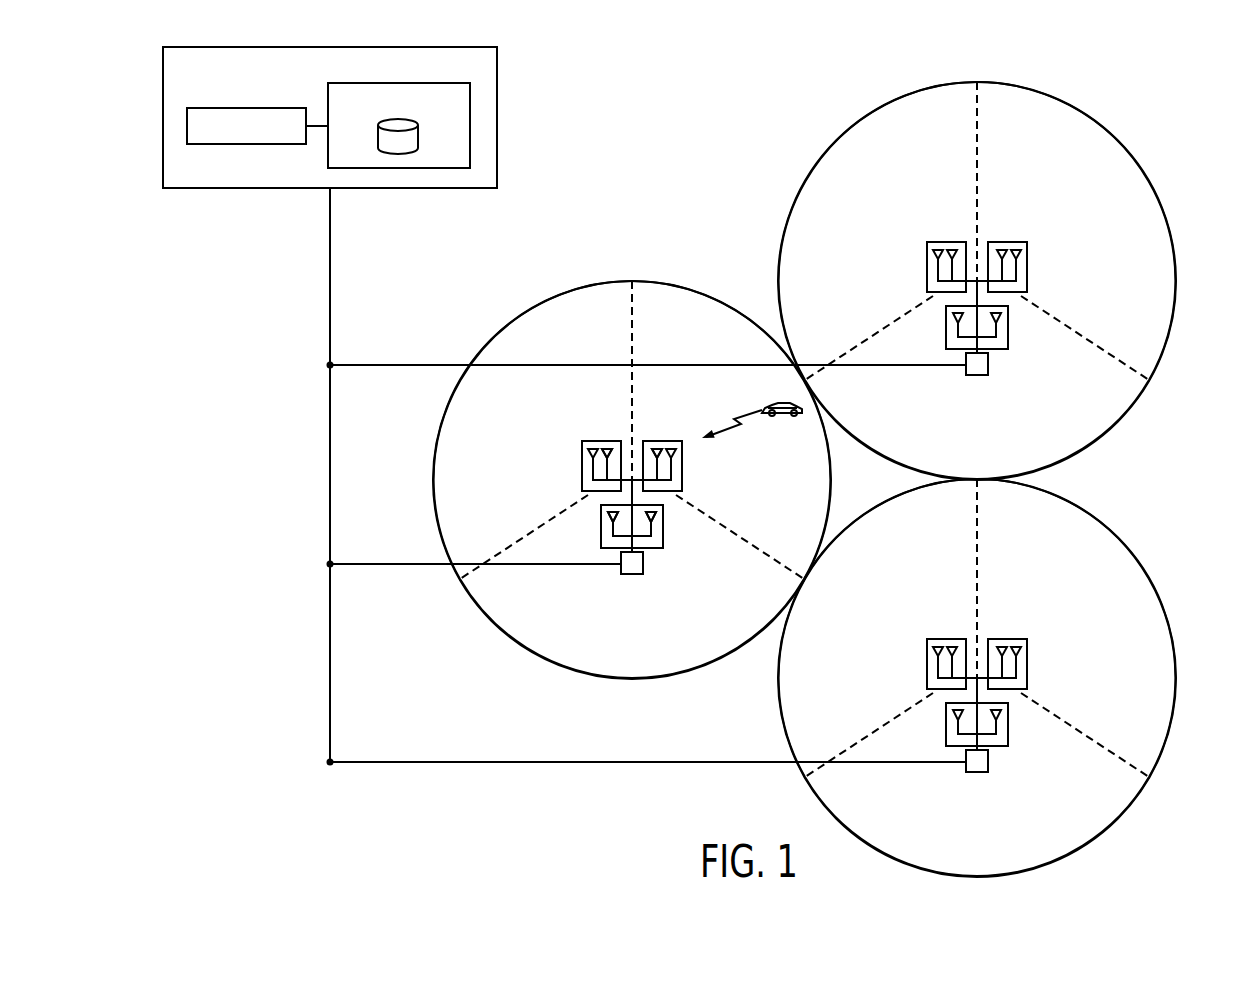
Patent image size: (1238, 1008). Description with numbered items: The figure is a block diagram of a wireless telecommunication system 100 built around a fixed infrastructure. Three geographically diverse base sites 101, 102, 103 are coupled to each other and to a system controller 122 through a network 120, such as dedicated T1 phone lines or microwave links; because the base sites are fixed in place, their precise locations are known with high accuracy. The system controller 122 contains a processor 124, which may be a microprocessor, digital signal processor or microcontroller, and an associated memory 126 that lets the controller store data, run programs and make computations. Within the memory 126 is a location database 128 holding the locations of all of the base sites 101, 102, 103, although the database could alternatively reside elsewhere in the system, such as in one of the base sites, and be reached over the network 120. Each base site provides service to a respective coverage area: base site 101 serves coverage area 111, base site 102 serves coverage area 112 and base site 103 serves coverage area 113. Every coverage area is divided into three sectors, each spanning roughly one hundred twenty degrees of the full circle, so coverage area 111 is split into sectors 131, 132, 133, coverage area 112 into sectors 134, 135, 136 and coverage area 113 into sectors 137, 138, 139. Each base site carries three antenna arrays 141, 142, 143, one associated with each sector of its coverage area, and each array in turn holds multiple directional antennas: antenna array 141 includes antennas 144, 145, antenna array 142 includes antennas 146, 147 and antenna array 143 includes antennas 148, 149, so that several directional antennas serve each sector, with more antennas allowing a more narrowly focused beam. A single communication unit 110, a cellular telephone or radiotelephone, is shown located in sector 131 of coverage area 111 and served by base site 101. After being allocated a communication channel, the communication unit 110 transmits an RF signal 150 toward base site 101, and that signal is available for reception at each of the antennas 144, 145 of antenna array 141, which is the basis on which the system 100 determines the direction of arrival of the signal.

The wireless telecommunication system 100 is at (555, 815).
The base site 101 is at (643, 590).
The base site 102 is at (988, 788).
The base site 103 is at (988, 391).
The communication unit 110 is at (785, 417).
The service coverage area 111 is at (485, 347).
The service coverage area 112 is at (1142, 563).
The service coverage area 113 is at (1132, 153).
The network 120 is at (331, 275).
The system controller 122 is at (365, 117).
The processor 124 is at (255, 146).
The memory 126 is at (327, 150).
The location database 128 is at (418, 140).
The sector 131 is at (715, 323).
The sector 132 is at (548, 323).
The sector 133 is at (600, 665).
The sector 134 is at (893, 520).
The sector 135 is at (1095, 820).
The sector 136 is at (1058, 520).
The sector 137 is at (893, 123).
The sector 138 is at (1093, 423).
The sector 139 is at (1058, 123).
The antenna array 141 is at (859, 480).
The antenna array 142 is at (748, 480).
The antenna array 143 is at (824, 545).
The antenna 144 is at (670, 471).
The antenna 145 is at (656, 449).
The antenna 146 is at (610, 449).
The antenna 147 is at (594, 471).
The antenna 148 is at (612, 530).
The antenna 149 is at (651, 528).
The RF signal 150 is at (735, 418).